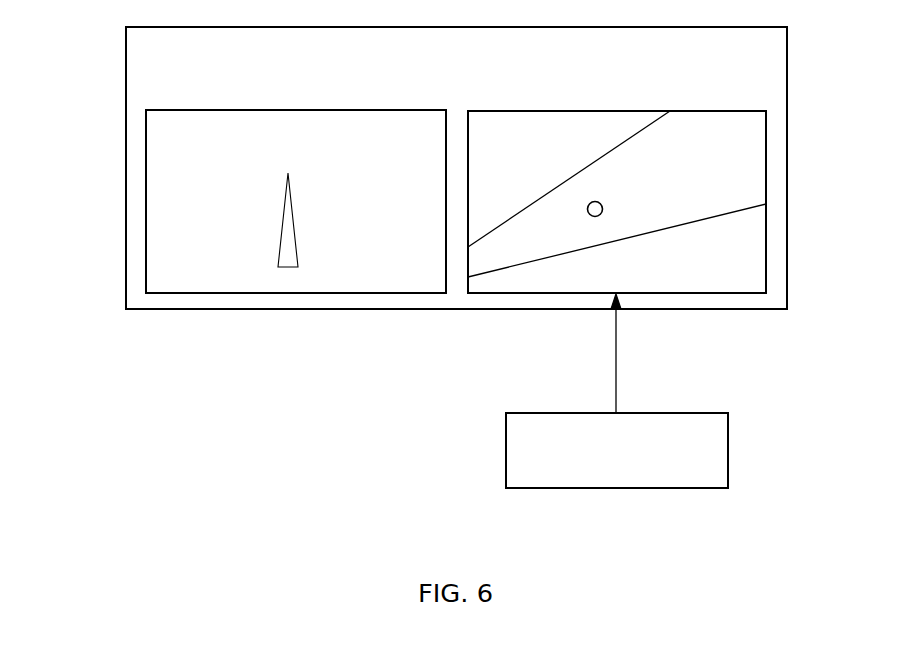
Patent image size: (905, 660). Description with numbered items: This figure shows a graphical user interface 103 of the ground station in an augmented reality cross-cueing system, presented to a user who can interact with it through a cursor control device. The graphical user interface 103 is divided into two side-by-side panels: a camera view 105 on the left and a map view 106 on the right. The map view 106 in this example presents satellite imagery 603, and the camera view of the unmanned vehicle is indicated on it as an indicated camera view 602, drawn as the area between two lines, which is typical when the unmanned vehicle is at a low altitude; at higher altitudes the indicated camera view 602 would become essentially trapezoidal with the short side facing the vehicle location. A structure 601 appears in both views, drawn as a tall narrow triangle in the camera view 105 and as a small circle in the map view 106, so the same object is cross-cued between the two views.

The graphical user interface 103 is at (474, 79).
The camera view 105 is at (165, 263).
The map view 106 is at (763, 258).
The structure 601 is at (289, 250).
The indicated camera view 602 is at (749, 149).
The satellite imagery 603 is at (634, 476).